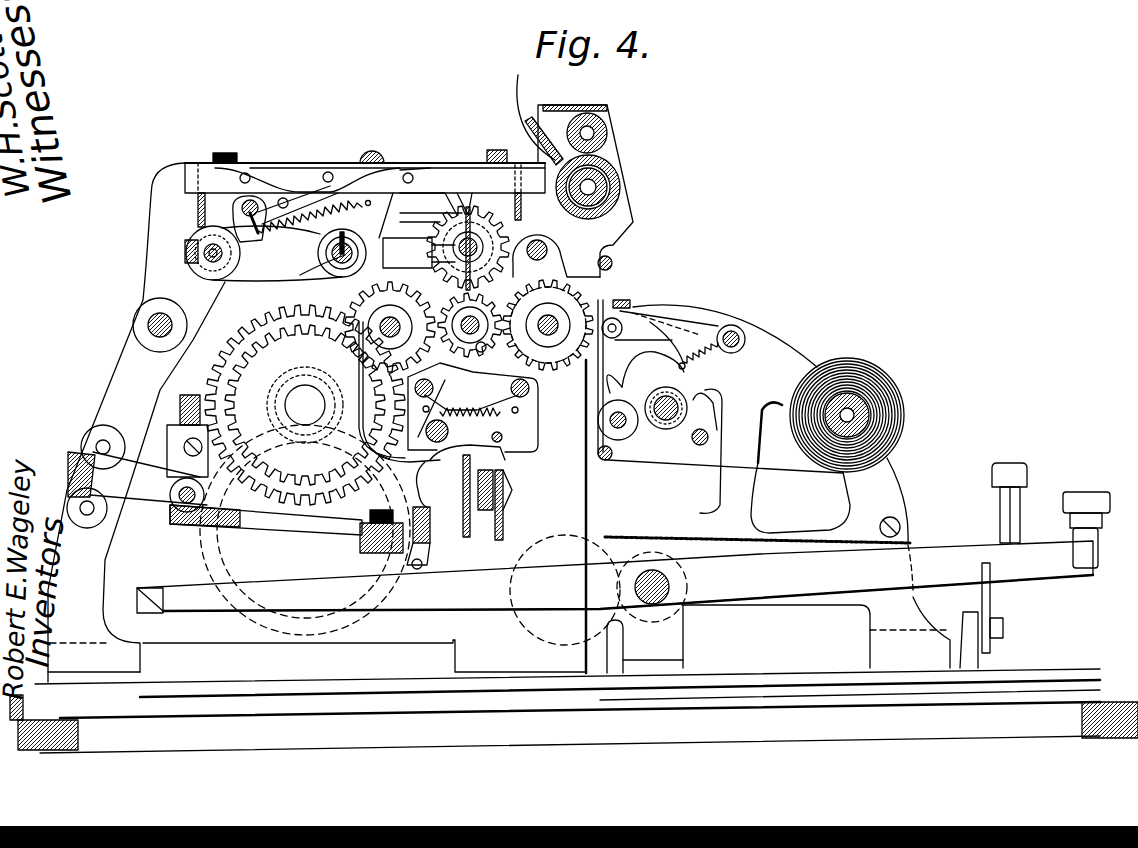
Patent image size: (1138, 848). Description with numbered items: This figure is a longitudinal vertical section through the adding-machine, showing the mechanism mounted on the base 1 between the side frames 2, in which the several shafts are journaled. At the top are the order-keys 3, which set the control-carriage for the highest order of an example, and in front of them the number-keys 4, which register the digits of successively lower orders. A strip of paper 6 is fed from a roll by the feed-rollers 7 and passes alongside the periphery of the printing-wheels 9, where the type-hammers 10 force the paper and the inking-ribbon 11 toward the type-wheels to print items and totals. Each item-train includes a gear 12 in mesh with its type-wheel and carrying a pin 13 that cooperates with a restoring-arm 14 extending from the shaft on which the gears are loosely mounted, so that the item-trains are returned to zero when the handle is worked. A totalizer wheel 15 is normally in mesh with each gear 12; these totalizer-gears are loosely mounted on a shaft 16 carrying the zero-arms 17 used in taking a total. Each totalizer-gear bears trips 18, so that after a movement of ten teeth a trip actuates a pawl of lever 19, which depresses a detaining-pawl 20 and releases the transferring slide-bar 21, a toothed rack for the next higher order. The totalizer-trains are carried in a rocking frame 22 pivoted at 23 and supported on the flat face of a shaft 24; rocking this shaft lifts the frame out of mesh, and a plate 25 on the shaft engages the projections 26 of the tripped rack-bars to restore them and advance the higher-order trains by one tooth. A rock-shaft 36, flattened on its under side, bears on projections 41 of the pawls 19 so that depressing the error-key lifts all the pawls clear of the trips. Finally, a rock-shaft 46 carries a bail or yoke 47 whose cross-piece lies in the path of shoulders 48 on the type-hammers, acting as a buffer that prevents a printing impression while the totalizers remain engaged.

The base 1 is at (753, 677).
The side frames 2 is at (758, 499).
The order-keys 3 is at (1013, 465).
The number-keys 4 is at (1085, 493).
The strip of paper 6 is at (616, 244).
The feed-rollers 7 is at (607, 172).
The printing-wheels 9 is at (620, 302).
The type-hammers 10 is at (637, 337).
The inking-ribbon 11 is at (634, 302).
The gear 12 is at (449, 462).
The pin 13 is at (423, 327).
The restoring-arm 14 is at (339, 397).
The wheel 15 is at (419, 246).
The shaft 16 is at (473, 252).
The zero-arms 17 is at (512, 262).
The trips 18 is at (428, 217).
The pawl of lever 19 is at (430, 180).
The detaining-pawl 20 is at (300, 195).
The transferring slide-bar 21 is at (293, 172).
The rocking frame 22 is at (263, 253).
The pivot 23 is at (211, 258).
The shaft 24 is at (340, 266).
The plate 25 is at (318, 262).
The projections 26 is at (378, 215).
The rock-shaft 36 is at (374, 150).
The projections 41 is at (393, 163).
The rock-shaft 46 is at (740, 331).
The bail or yoke 47 is at (697, 348).
The shoulders 48 is at (650, 315).